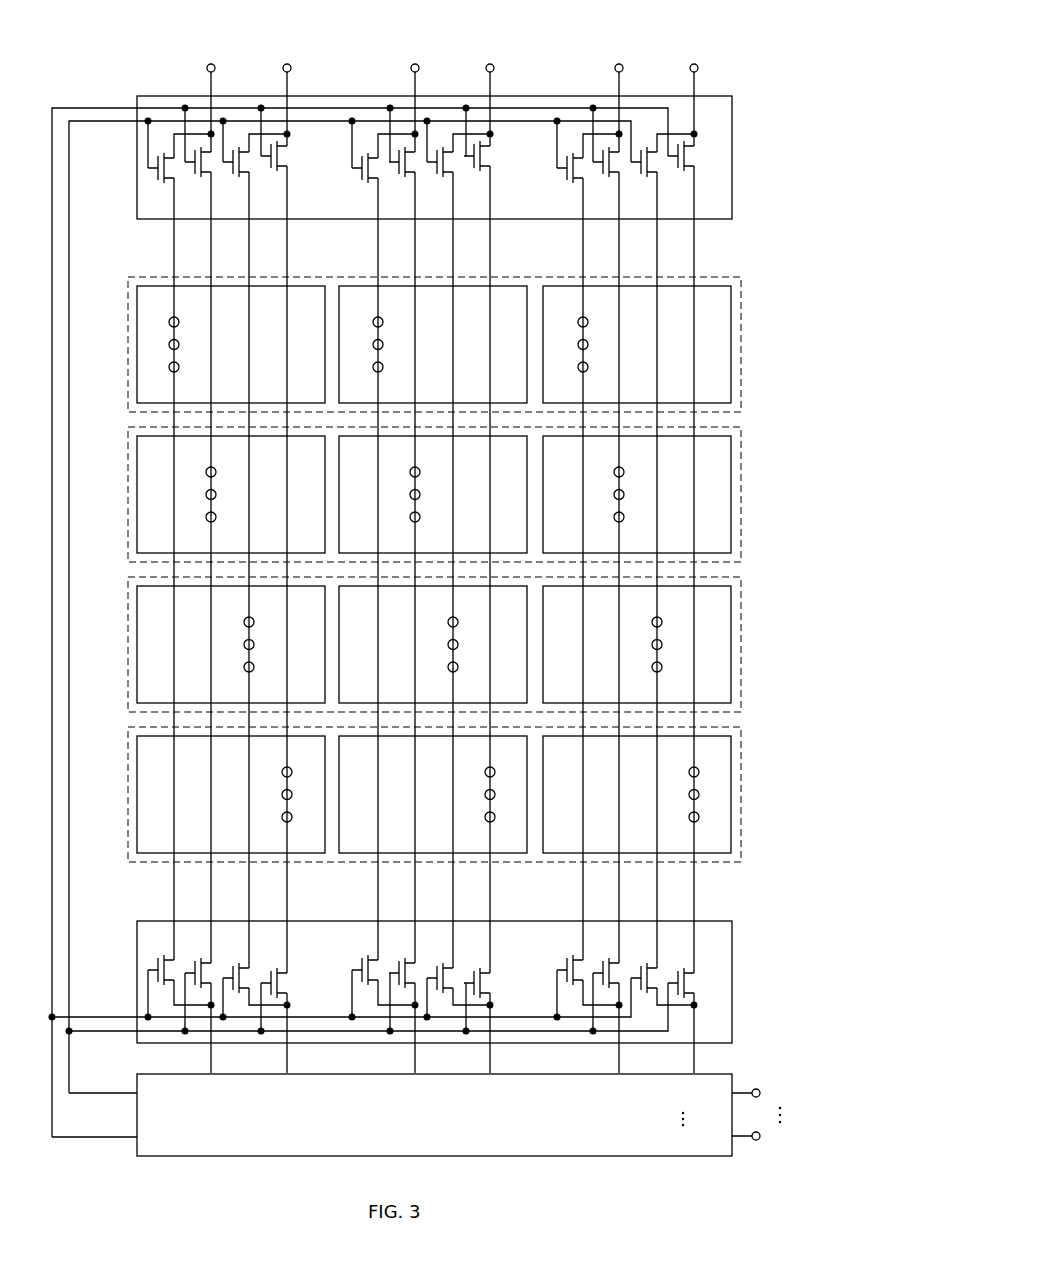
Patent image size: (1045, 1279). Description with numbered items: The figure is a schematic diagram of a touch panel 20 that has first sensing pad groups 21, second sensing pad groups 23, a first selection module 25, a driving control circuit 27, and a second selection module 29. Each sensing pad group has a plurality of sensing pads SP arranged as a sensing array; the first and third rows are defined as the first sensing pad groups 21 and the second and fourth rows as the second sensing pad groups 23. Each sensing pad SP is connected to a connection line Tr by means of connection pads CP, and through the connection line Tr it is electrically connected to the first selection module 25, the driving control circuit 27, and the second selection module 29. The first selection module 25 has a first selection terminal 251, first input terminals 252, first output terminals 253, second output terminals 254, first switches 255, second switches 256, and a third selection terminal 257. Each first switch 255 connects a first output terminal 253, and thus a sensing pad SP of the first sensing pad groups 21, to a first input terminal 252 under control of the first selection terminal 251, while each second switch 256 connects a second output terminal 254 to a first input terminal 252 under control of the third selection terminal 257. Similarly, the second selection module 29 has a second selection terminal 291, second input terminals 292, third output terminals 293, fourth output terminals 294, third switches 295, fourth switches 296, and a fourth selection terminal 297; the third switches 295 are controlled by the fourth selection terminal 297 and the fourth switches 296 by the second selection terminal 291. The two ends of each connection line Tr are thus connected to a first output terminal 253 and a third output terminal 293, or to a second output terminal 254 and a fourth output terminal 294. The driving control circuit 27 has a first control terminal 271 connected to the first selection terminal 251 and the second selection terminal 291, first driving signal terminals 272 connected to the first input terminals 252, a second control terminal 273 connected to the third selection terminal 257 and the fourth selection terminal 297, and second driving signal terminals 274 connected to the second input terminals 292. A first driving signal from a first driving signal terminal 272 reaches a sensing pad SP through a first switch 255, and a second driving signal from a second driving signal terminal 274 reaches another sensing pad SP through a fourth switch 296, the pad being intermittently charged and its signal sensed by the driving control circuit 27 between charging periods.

The touch panel 20 is at (835, 24).
The first sensing pad group 21 is at (742, 341).
The second sensing pad group 23 is at (742, 491).
The first selection module 25 is at (734, 984).
The driving control circuit 27 is at (590, 1160).
The second selection module 29 is at (734, 152).
The first selection terminal 251 is at (102, 1015).
The first input terminal 252 is at (287, 1058).
The first output terminal 253 is at (249, 898).
The second output terminal 254 is at (287, 879).
The first switch 255 is at (423, 971).
The second switch 256 is at (458, 981).
The third selection terminal 257 is at (108, 1033).
The first control terminal 271 is at (140, 1137).
The first driving signal terminal 272 is at (211, 1074).
The second control terminal 273 is at (140, 1093).
The second driving signal terminal 274 is at (732, 1093).
The second selection terminal 291 is at (93, 106).
The second input terminal 292 is at (287, 85).
The third output terminal 293 is at (249, 258).
The fourth output terminal 294 is at (287, 247).
The third switch 295 is at (423, 168).
The fourth switch 296 is at (459, 157).
The fourth selection terminal 297 is at (105, 125).
The sensing pad SP is at (128, 300).
The connection pad CP is at (168, 323).
The connection line Tr is at (170, 388).